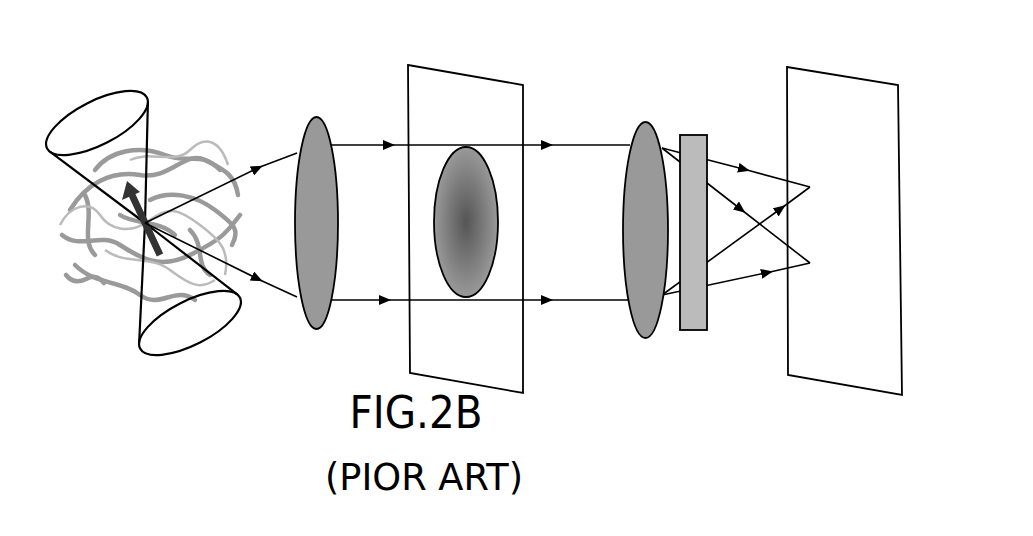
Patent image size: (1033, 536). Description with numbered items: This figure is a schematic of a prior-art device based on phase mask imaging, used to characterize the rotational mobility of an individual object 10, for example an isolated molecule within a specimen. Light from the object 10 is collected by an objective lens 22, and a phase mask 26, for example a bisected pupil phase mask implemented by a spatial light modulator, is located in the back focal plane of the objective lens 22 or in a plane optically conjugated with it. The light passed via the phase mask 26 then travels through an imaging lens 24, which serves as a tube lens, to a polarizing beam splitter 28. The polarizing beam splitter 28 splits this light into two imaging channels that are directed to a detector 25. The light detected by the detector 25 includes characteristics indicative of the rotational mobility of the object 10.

The object 10 is at (93, 282).
The objective lens 22 is at (323, 117).
The phase mask 26 is at (467, 153).
The imaging lens 24 is at (647, 122).
The polarizing beam splitter 28 is at (692, 135).
The detector 25 is at (833, 108).